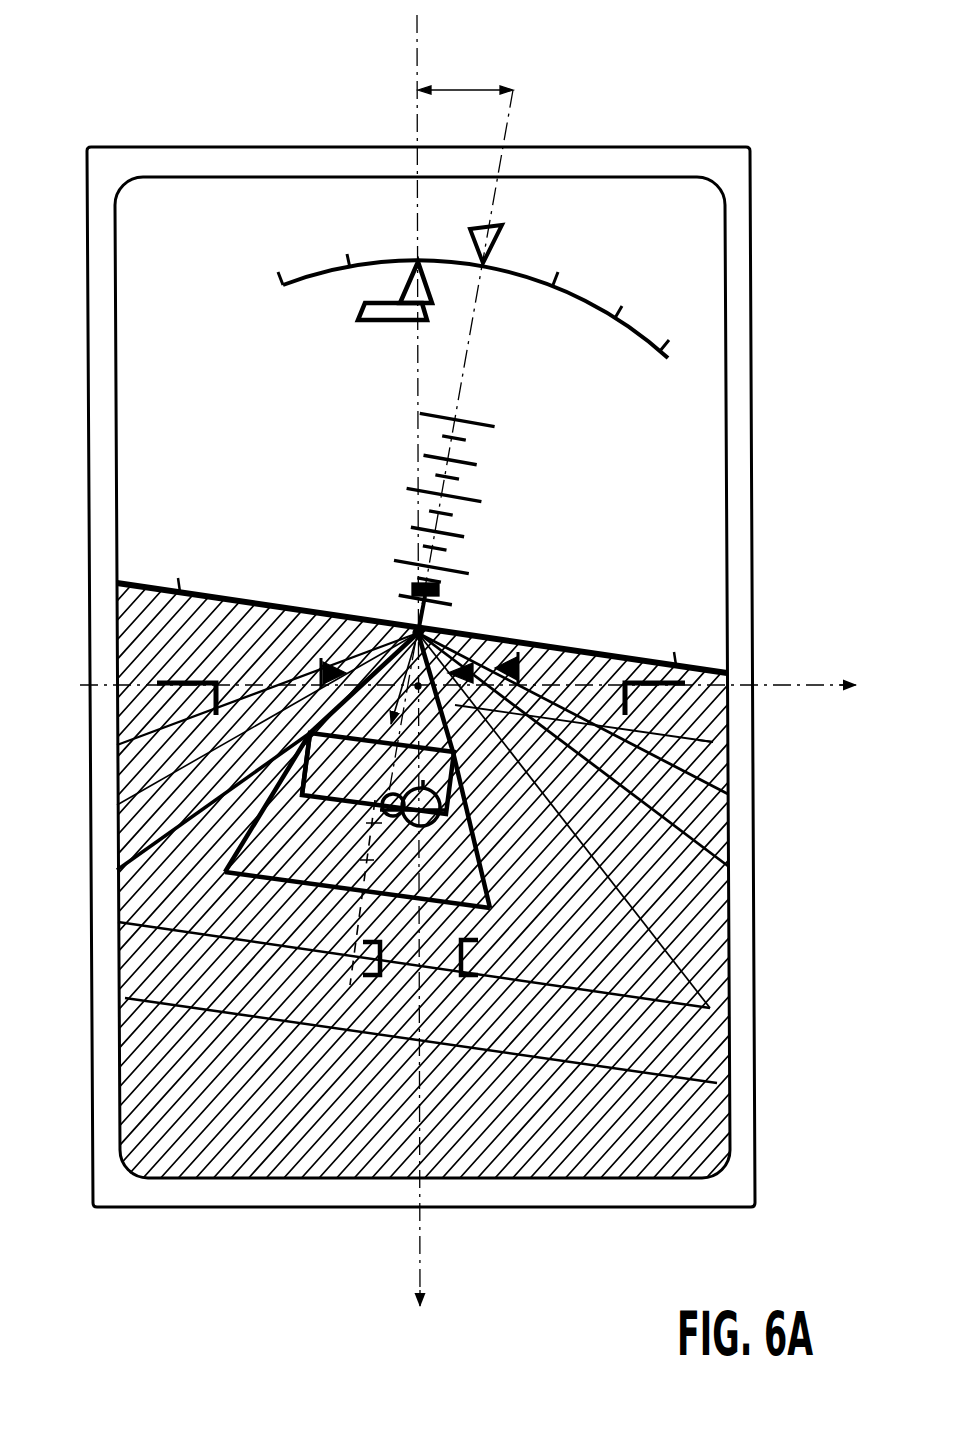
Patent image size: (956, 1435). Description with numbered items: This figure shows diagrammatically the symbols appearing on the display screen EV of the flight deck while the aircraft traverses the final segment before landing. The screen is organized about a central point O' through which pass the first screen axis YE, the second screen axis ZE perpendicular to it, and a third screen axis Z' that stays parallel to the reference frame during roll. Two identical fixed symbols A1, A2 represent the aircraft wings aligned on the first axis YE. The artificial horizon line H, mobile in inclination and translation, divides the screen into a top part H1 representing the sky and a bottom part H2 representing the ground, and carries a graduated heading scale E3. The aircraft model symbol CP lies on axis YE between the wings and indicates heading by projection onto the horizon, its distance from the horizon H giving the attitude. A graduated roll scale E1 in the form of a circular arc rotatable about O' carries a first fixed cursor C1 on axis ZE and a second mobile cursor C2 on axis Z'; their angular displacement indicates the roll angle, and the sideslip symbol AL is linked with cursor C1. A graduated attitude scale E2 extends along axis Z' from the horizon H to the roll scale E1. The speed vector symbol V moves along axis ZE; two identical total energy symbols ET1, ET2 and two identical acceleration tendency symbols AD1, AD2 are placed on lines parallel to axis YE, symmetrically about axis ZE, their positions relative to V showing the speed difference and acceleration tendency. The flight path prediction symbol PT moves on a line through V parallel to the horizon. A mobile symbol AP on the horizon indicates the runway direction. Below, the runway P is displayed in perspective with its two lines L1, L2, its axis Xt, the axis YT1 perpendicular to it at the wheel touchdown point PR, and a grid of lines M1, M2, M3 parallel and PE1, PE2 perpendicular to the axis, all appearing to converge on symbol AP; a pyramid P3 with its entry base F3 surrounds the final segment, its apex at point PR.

The display screen EV is at (222, 142).
The third screen axis O' Z' is at (490, 441).
The mobile roll scale E1 is at (298, 266).
The first fixed cursor C1 is at (405, 280).
The second mobile cursor C2 is at (496, 244).
The sideslip or lateral acceleration symbol AL is at (360, 320).
The graduated attitude scale E2 is at (494, 442).
The top part of screen (sky) H1 is at (705, 408).
The artificial horizon line H is at (135, 580).
The graduated heading scale E3 is at (258, 600).
The central point of the screen O' is at (382, 577).
The runway direction symbol AP is at (440, 626).
The aircraft model symbol CP is at (437, 603).
The acceleration tendency symbol AD1 is at (340, 655).
The acceleration tendency symbol AD2 is at (505, 652).
The fixed wing symbol A1 is at (196, 683).
The fixed wing symbol A2 is at (645, 680).
The first screen axis O' YE is at (470, 669).
The wheel touchdown point PR is at (300, 680).
The pyramid P3 is at (520, 712).
The ground line M3 is at (662, 724).
The ground line M2 is at (630, 782).
The ground line M1 is at (660, 945).
The entry base of the pyramid F3 is at (303, 796).
The speed vector symbol V is at (437, 832).
The flight path prediction symbol PT is at (372, 826).
The axis Yt1 YT1 is at (712, 736).
The runway line L2 is at (230, 850).
The runway line L1 is at (480, 868).
The runway P is at (318, 890).
The grid line perpendicular to runway axis PE2 is at (230, 938).
The grid line perpendicular to runway axis PE1 is at (230, 1018).
The runway axis Xt is at (347, 972).
The total energy symbol ET1 is at (365, 985).
The total energy symbol ET2 is at (467, 978).
The bottom part of screen (ground) H2 is at (702, 1098).
The second screen axis O' ZE is at (414, 682).